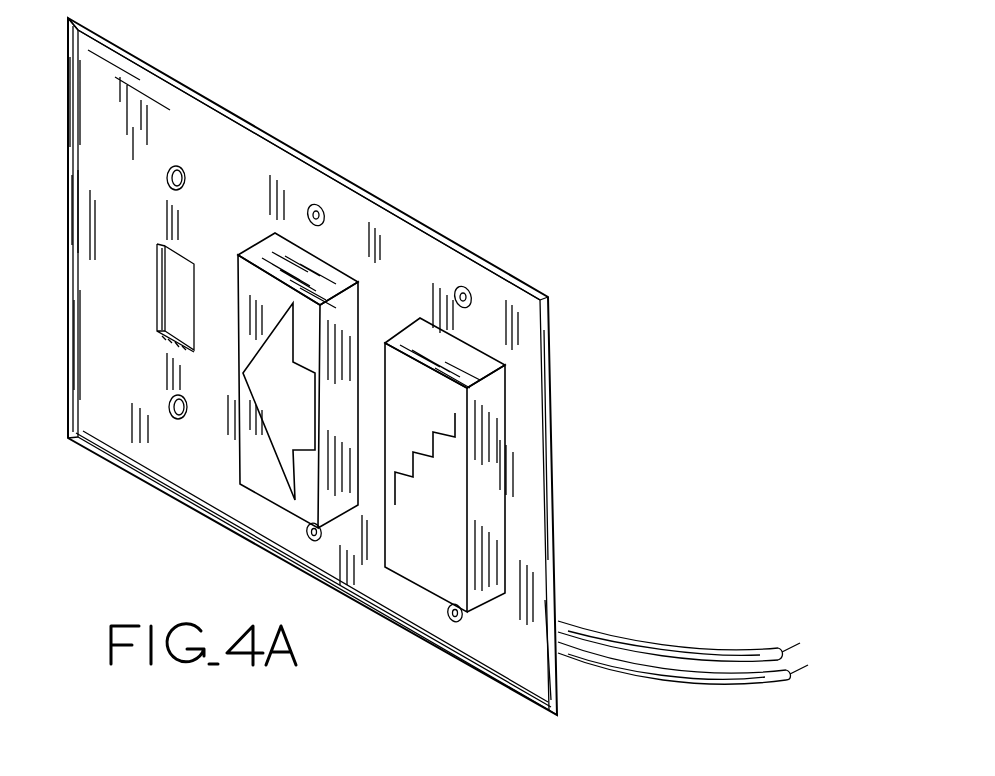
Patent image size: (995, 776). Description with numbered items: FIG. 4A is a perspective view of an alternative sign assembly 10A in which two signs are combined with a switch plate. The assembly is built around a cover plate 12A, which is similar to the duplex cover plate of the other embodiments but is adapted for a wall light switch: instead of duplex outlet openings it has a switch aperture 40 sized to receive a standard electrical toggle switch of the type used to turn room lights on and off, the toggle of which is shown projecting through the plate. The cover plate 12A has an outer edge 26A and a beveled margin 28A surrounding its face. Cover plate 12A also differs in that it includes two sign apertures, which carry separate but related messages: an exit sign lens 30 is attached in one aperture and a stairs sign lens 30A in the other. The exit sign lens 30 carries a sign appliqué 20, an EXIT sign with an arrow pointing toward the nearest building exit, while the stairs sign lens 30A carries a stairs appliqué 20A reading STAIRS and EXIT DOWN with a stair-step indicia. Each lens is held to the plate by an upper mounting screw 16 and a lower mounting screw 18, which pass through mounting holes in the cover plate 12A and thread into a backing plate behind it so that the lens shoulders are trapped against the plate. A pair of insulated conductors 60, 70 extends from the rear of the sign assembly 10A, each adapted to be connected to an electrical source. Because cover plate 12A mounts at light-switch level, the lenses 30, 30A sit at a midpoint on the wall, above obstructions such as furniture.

The sign assembly 10A is at (458, 93).
The cover plate 12A is at (227, 138).
The top edge of cover plate 26A is at (143, 100).
The beveled edge of cover plate 28A is at (198, 92).
The upper mounting screw 16 is at (316, 204).
The lower mounting screw 18 is at (313, 541).
The exit sign lens 30 is at (301, 370).
The sign appliqué 20 is at (320, 418).
The stairs sign lens 30A is at (505, 435).
The stairs sign appliqué 20A is at (447, 492).
The apparatus aperture 40 is at (181, 288).
The insulated conductor 60 is at (752, 684).
The insulated conductor 70 is at (732, 650).